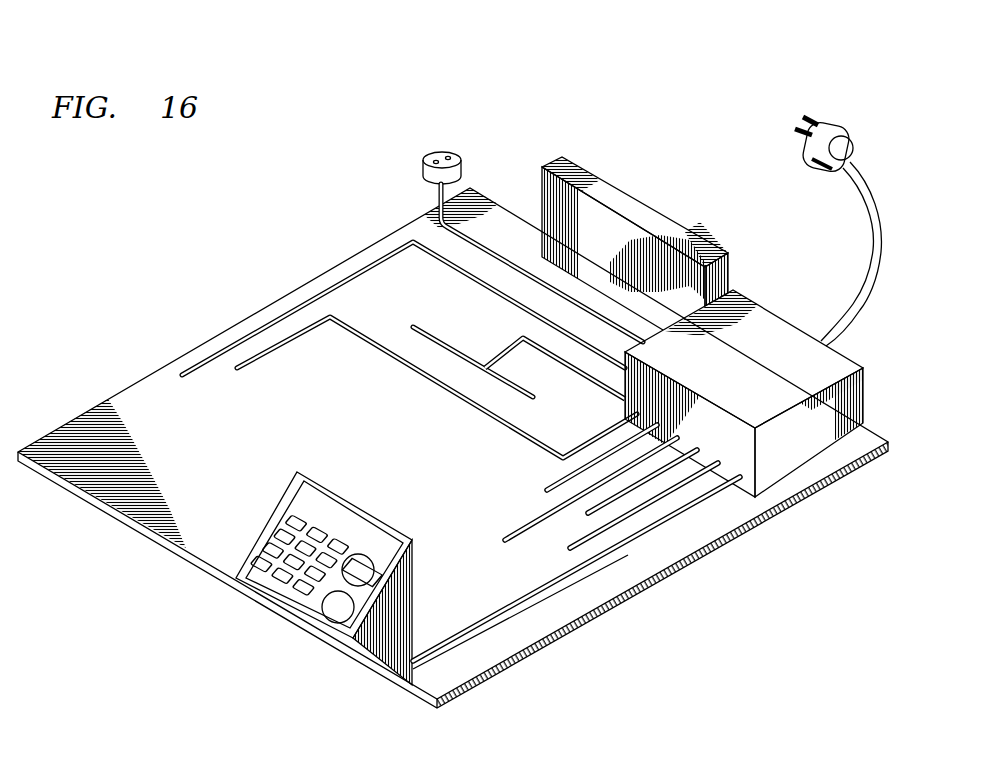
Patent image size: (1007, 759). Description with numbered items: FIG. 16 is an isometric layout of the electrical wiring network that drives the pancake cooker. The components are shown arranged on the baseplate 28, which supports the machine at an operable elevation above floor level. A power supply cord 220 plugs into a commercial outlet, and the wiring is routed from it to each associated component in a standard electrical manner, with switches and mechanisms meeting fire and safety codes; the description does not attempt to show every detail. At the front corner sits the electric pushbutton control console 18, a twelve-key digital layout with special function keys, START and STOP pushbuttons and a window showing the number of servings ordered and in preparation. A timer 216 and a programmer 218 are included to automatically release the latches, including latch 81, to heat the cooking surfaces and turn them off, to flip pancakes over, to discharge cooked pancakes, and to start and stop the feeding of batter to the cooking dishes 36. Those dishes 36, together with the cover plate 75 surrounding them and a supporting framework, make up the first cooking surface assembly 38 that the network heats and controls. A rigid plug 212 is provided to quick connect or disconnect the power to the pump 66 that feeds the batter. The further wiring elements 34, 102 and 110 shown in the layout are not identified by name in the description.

The electric pushbutton control console 18 is at (297, 472).
The baseplate 28 is at (182, 556).
The sensor rail 34 is at (237, 368).
The dishes 36 is at (505, 540).
The first cooking surface assembly 38 is at (547, 490).
The pump 66 is at (588, 513).
The cover plate 75 is at (413, 327).
The latch 81 is at (182, 375).
The guide rod 102 is at (576, 569).
The guide rod 110 is at (570, 548).
The rigid plug 212 is at (441, 150).
The timer 216 is at (606, 200).
The programmer 218 is at (775, 345).
The power supply cord 220 is at (832, 130).